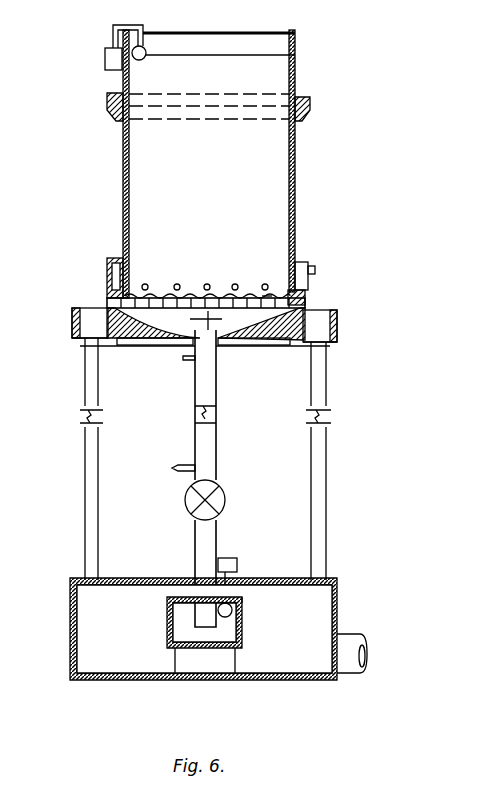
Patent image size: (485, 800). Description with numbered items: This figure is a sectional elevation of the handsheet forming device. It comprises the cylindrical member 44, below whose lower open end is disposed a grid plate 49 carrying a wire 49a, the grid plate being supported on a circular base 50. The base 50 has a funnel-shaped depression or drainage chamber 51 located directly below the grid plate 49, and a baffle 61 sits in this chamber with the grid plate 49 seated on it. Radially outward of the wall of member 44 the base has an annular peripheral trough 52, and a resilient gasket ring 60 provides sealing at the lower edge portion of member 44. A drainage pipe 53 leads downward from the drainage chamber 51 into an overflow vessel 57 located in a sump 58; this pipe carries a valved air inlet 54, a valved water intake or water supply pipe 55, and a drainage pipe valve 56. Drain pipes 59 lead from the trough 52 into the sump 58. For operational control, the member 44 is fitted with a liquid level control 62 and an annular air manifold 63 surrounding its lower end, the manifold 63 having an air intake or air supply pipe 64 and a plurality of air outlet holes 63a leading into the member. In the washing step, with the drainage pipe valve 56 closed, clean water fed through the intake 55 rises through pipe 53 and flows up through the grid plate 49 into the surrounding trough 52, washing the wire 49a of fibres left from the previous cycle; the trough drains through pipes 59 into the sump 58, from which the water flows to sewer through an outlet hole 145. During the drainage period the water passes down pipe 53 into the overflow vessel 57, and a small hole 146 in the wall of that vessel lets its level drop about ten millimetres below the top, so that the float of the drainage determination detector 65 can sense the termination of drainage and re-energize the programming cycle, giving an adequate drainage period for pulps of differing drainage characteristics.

The member 44 is at (123, 132).
The liquid level control 62 is at (105, 60).
The annular air manifold 63 is at (107, 280).
The air intake or air supply pipe 64 is at (312, 268).
The air outlet holes 63a is at (206, 283).
The wire 49a is at (218, 293).
The funnel-shaped depression or drainage chamber 51 is at (266, 296).
The resilient gasket ring 60 is at (107, 295).
The grid plate 49 is at (305, 306).
The baffle 61 is at (190, 319).
The circular base 50 is at (72, 319).
The annular peripheral trough 52 is at (78, 330).
The drain pipes 59 is at (88, 382).
The drainage pipe 53 is at (216, 375).
The valved air inlet 54 is at (186, 358).
The valved water intake or water supply pipe 55 is at (172, 468).
The drainage pipe valve 56 is at (185, 500).
The drainage determination detector 65 is at (238, 560).
The sump 58 is at (72, 608).
The overflow vessel 57 is at (244, 618).
The outlet hole 145 is at (349, 633).
The small hole 146 is at (243, 602).